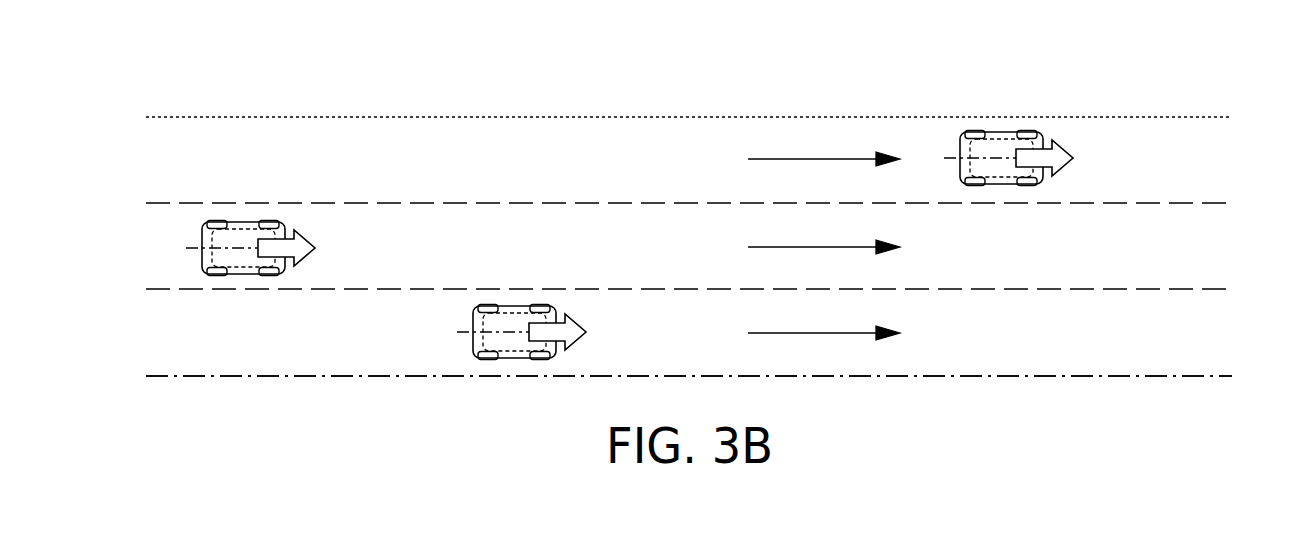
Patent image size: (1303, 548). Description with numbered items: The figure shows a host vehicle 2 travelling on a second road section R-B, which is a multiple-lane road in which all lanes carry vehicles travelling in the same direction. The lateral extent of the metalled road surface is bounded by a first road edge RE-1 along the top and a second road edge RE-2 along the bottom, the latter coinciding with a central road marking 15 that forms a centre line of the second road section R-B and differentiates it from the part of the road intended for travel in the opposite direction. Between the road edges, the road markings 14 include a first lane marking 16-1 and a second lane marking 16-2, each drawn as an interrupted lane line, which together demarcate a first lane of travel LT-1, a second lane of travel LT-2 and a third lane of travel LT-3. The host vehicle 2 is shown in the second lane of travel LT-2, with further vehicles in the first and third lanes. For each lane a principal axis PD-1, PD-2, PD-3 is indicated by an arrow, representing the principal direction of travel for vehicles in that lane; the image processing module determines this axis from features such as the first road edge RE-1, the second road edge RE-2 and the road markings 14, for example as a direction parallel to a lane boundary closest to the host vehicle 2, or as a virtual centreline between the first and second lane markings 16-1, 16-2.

The host vehicle 2 is at (198, 253).
The road markings 14 is at (1209, 163).
The central road marking 15 is at (1226, 374).
The first lane marking 16-1 is at (1172, 206).
The second lane marking 16-2 is at (1225, 287).
The first road edge RE-1 is at (1222, 116).
The second road edge RE-2 is at (1190, 378).
The first lane of travel LT-1 is at (689, 170).
The second lane of travel LT-2 is at (689, 256).
The third lane of travel LT-3 is at (689, 343).
The principal axis PD-1 is at (824, 149).
The principal axis PD-2 is at (824, 237).
The principal axis PD-3 is at (824, 322).
The second road section R-B is at (1024, 96).